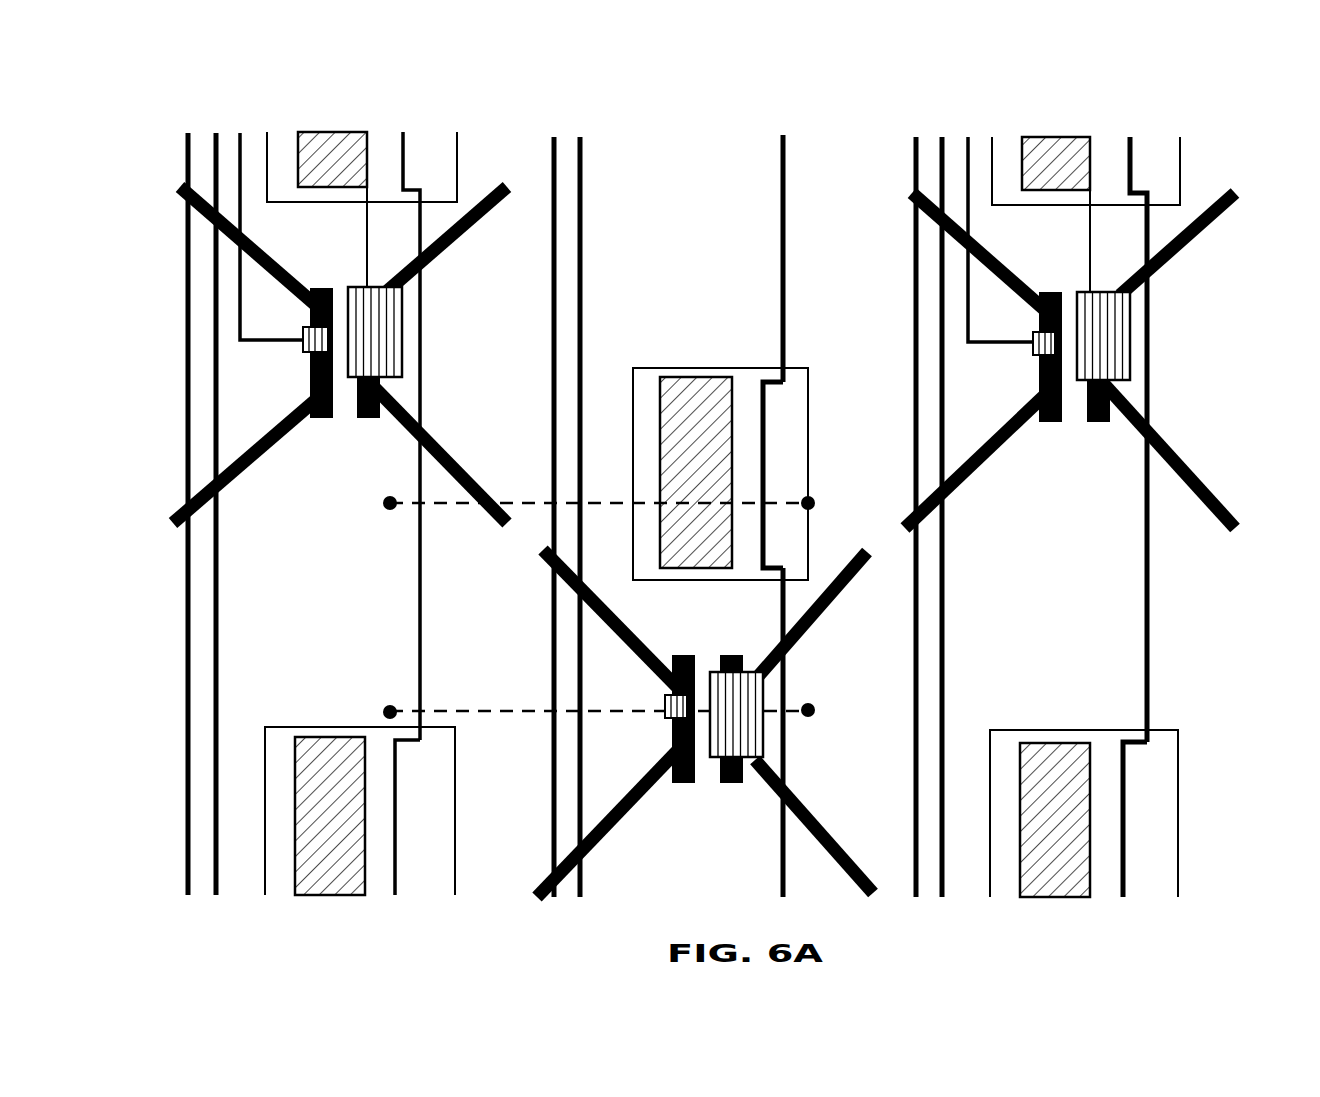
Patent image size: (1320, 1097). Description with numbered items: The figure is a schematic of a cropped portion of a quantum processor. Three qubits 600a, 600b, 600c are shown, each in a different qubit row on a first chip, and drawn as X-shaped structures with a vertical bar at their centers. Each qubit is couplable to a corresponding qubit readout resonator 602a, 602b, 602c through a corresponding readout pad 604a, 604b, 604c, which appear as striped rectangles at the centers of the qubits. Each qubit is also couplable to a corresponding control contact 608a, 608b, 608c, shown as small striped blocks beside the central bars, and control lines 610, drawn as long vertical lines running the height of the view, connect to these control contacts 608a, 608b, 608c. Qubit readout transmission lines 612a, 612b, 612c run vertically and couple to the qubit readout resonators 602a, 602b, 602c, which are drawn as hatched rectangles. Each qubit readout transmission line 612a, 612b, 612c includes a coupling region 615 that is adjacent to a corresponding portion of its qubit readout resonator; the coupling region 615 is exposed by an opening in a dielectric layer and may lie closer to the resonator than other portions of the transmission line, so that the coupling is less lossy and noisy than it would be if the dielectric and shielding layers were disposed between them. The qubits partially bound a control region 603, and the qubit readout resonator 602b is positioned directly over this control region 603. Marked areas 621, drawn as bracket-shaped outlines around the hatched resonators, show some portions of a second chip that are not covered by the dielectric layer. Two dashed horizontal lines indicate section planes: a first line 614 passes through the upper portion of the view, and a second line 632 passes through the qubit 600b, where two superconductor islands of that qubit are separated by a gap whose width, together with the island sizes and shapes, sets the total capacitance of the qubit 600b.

The control lines 610 is at (240, 133).
The qubit readout resonator 602a is at (327, 140).
The qubit readout resonator 602b is at (687, 377).
The qubit readout resonator 602c is at (1062, 137).
The qubit 600a is at (490, 190).
The qubit 600b is at (827, 607).
The qubit 600c is at (1197, 243).
The readout pad 604a is at (402, 332).
The readout pad 604b is at (763, 688).
The readout pad 604c is at (1130, 337).
The control contact 608a is at (303, 347).
The control contact 608b is at (665, 717).
The control contact 608c is at (1033, 350).
The qubit readout transmission line 612a is at (422, 377).
The qubit readout transmission line 612b is at (785, 210).
The qubit readout transmission line 612c is at (1150, 647).
The first line 614 is at (816, 500).
The second line 632 is at (808, 718).
The coupling region 615 is at (397, 805).
The marked areas 621 is at (330, 727).
The control region 603 is at (685, 204).